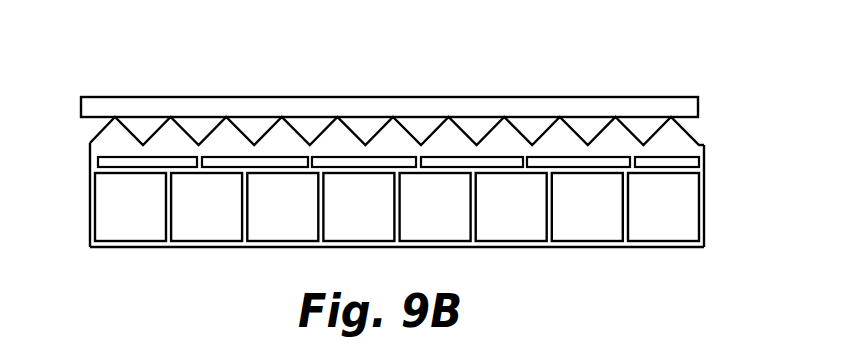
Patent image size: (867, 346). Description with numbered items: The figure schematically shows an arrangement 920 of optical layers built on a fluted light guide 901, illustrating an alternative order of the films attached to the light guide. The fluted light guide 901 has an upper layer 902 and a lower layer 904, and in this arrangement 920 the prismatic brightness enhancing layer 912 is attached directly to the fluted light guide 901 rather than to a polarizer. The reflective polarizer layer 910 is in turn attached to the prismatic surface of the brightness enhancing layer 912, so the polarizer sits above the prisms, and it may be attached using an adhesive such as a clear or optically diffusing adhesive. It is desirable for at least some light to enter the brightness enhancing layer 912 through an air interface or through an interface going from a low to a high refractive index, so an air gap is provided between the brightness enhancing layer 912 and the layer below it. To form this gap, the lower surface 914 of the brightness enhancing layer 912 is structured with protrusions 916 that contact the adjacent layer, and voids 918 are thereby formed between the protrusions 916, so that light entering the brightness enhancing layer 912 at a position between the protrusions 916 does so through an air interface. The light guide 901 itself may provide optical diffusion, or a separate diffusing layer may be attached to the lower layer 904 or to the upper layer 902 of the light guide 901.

The arrangement 920 is at (103, 65).
The reflective polarizer layer 910 is at (699, 108).
The prismatic brightness enhancing layer 912 is at (100, 139).
The lower surface 914 is at (100, 161).
The protrusions 916 is at (631, 160).
The voids 918 is at (239, 161).
The upper layer 902 is at (118, 174).
The lower layer 904 is at (118, 249).
The fluted light guide 901 is at (706, 216).